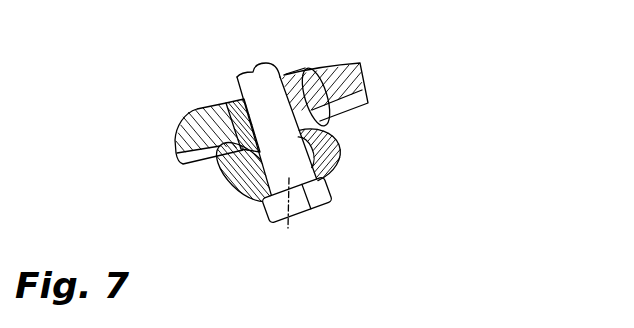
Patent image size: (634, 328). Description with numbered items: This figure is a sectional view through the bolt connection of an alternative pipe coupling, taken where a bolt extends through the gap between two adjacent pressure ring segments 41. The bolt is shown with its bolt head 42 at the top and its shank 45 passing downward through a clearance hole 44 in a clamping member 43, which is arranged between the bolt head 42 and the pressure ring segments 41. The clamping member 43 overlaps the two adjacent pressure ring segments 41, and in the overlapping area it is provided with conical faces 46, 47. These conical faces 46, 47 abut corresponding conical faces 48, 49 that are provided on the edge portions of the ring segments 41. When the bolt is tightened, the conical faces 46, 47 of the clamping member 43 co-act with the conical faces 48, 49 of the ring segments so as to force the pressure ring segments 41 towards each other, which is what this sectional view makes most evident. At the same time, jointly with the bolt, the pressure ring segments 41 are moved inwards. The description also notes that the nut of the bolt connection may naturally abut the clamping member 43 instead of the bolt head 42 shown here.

The pressure ring segments 41 is at (174, 143).
The bolt head 42 is at (329, 186).
The clamping member 43 is at (341, 155).
The clearance hole 44 is at (287, 224).
The shank 45 is at (268, 93).
The conical face 46 is at (222, 103).
The conical face 47 is at (300, 73).
The conical face 48 is at (233, 151).
The conical face 49 is at (338, 131).